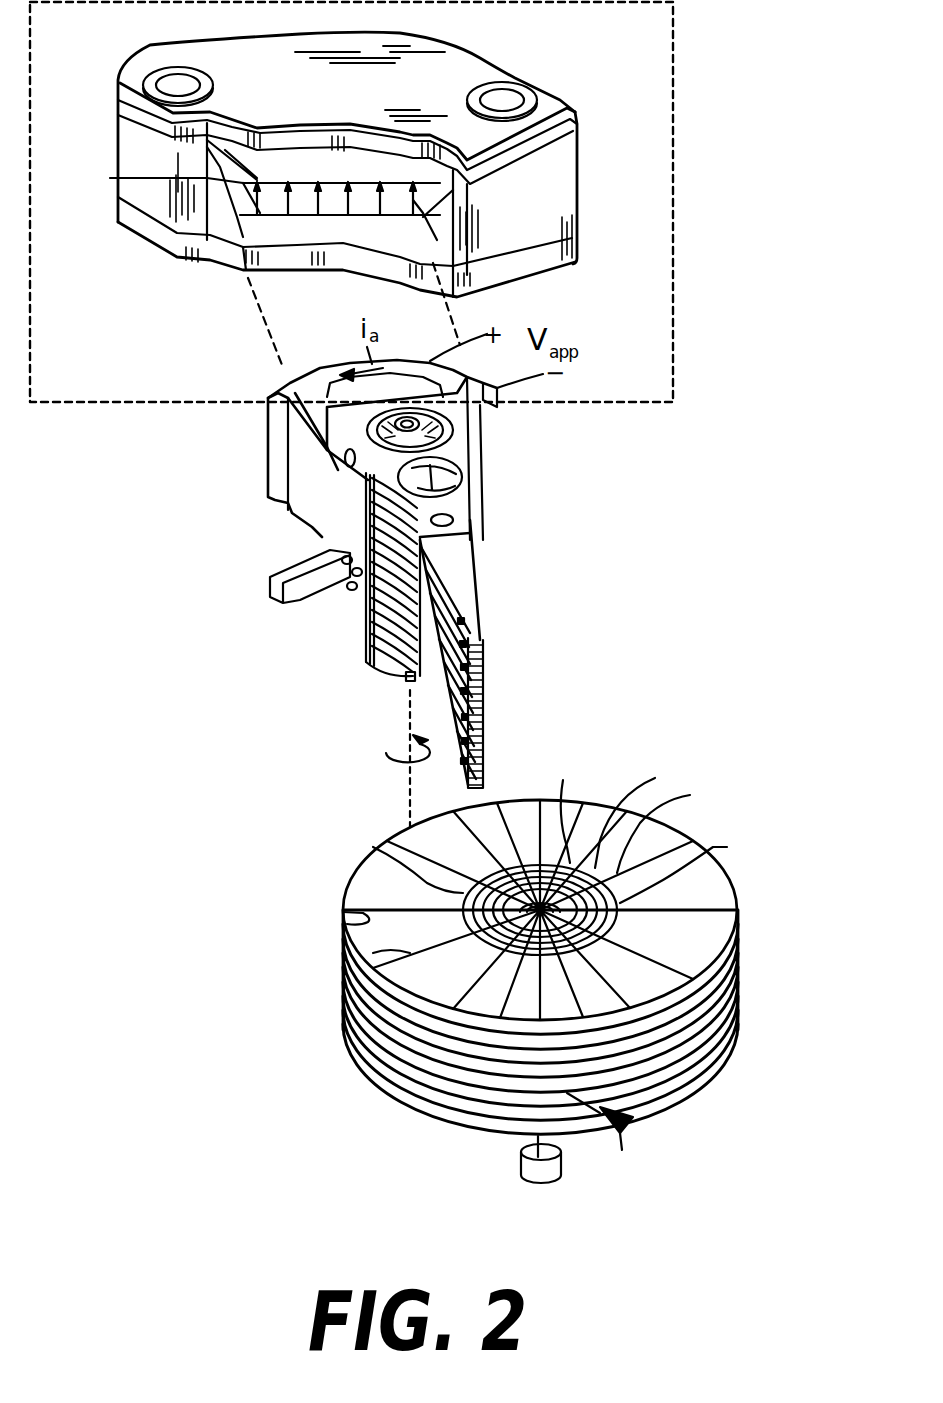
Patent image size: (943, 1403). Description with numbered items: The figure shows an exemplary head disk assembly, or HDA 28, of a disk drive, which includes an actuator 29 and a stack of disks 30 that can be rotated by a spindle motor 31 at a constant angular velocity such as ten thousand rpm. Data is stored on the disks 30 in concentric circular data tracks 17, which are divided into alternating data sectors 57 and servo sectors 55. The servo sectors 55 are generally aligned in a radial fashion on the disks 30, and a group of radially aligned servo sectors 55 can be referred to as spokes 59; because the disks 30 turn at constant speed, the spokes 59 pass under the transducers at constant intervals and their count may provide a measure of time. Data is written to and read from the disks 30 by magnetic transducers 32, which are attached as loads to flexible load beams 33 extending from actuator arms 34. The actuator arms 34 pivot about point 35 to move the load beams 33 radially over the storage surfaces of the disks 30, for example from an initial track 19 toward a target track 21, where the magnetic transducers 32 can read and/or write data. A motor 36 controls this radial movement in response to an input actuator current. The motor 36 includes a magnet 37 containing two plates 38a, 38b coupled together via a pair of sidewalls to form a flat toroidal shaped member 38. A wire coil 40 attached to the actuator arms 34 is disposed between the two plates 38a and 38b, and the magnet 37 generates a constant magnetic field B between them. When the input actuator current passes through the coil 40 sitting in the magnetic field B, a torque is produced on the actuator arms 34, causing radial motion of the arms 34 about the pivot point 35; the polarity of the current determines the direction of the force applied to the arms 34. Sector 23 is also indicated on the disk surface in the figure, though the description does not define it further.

The concentric circular data tracks 17 is at (568, 803).
The initial track 19 is at (670, 826).
The target track 21 is at (689, 863).
The servo wedge 23 is at (640, 812).
The HDA 28 is at (573, 502).
The actuator 29 is at (103, 490).
The disks 30 is at (540, 989).
The spindle motor 31 is at (520, 1167).
The magnetic transducers 32 is at (482, 640).
The flexible load beams 33 is at (470, 577).
The actuator arms 34 is at (470, 487).
The pivot point 35 is at (450, 420).
The motor 36 is at (675, 183).
The magnet 37 is at (455, 34).
The flat toroidal shaped member 38 is at (560, 183).
The plate 38a is at (303, 155).
The plate 38b is at (297, 237).
The wire coil 40 is at (308, 387).
The servo sectors 55 is at (343, 914).
The data sectors 57 is at (373, 847).
The spokes 59 is at (345, 980).
The magnetic field B is at (110, 178).